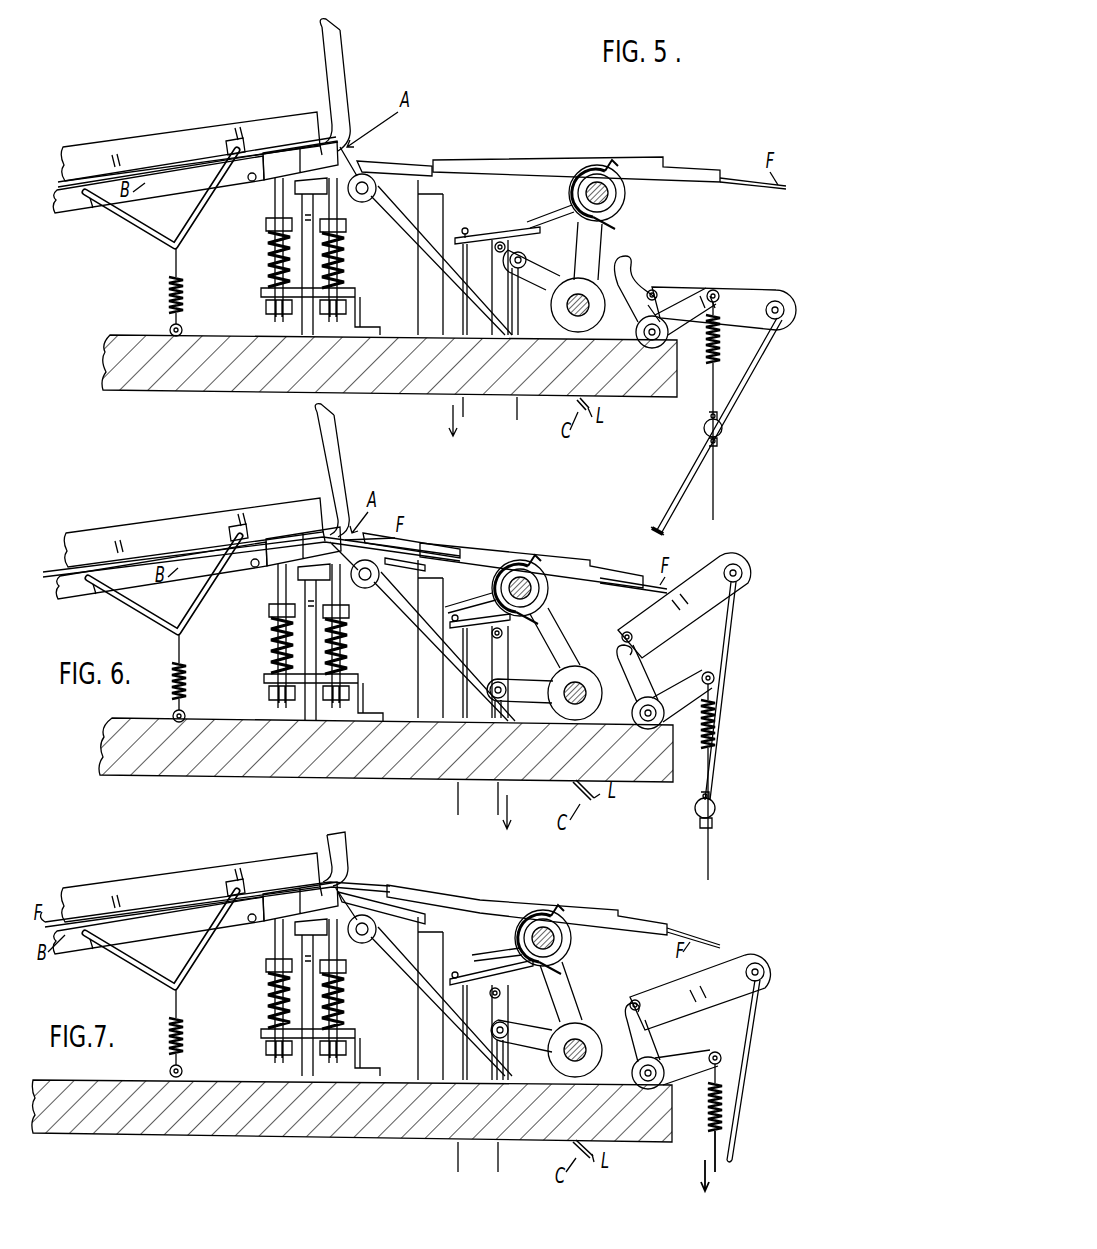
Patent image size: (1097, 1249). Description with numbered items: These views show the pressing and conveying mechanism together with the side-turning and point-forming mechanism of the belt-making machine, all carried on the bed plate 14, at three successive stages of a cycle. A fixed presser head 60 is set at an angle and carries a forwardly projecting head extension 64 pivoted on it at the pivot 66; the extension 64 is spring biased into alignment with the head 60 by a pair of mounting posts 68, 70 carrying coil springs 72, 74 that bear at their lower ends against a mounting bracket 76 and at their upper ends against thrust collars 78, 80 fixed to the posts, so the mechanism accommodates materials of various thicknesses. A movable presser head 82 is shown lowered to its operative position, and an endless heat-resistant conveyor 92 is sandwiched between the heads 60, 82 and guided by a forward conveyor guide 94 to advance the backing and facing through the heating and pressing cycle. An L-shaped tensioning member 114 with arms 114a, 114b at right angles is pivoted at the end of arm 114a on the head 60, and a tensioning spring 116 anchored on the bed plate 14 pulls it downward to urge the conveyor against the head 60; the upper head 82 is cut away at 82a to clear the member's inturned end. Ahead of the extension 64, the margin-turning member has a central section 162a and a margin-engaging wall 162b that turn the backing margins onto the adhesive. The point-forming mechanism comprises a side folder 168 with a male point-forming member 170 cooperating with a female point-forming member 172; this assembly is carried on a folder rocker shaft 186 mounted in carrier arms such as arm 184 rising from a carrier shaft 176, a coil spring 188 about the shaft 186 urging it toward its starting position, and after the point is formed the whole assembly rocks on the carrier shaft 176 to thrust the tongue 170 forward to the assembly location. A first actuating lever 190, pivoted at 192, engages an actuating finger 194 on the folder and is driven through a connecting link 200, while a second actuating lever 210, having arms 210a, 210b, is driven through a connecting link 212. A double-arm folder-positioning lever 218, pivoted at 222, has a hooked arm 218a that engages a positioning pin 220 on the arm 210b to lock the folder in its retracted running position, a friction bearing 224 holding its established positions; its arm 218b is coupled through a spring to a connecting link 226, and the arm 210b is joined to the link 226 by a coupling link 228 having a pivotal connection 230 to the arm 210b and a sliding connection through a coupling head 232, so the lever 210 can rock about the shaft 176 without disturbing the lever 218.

In FIG. 5, the bed plate 14 is at (145, 382).
In FIG. 6, the bed plate 14 is at (100, 764).
In FIG. 7, the bed plate 14 is at (92, 1130).
In FIG. 5, the fixed presser head 60 is at (68, 208).
In FIG. 6, the fixed presser head 60 is at (155, 583).
In FIG. 7, the fixed presser head 60 is at (148, 946).
In FIG. 5, the head extension 64 is at (290, 152).
In FIG. 6, the head extension 64 is at (303, 538).
In FIG. 7, the head extension 64 is at (299, 893).
In FIG. 5, the pivot 66 is at (250, 181).
In FIG. 6, the pivot 66 is at (241, 580).
In FIG. 7, the pivot 66 is at (234, 938).
In FIG. 5, the mounting post 68 is at (270, 205).
In FIG. 6, the mounting post 68 is at (268, 636).
In FIG. 7, the mounting post 68 is at (263, 991).
In FIG. 5, the mounting post 70 is at (345, 262).
In FIG. 6, the mounting post 70 is at (333, 672).
In FIG. 7, the mounting post 70 is at (348, 1001).
In FIG. 5, the coil spring 72 is at (268, 262).
In FIG. 6, the coil spring 72 is at (262, 645).
In FIG. 7, the coil spring 72 is at (258, 1000).
In FIG. 5, the coil spring 74 is at (345, 282).
In FIG. 6, the coil spring 74 is at (364, 646).
In FIG. 7, the coil spring 74 is at (360, 1013).
In FIG. 5, the mounting bracket 76 is at (262, 293).
In FIG. 6, the mounting bracket 76 is at (303, 696).
In FIG. 7, the mounting bracket 76 is at (298, 1048).
In FIG. 5, the thrust collar 78 is at (266, 230).
In FIG. 6, the thrust collar 78 is at (250, 629).
In FIG. 7, the thrust collar 78 is at (245, 975).
In FIG. 5, the thrust collar 80 is at (344, 236).
In FIG. 6, the thrust collar 80 is at (350, 636).
In FIG. 7, the thrust collar 80 is at (348, 991).
In FIG. 5, the movable presser head 82 is at (155, 135).
In FIG. 6, the movable presser head 82 is at (193, 530).
In FIG. 7, the movable presser head 82 is at (190, 881).
In FIG. 5, the cut away 82a is at (234, 138).
In FIG. 6, the cut away 82a is at (218, 530).
In FIG. 7, the cut away 82a is at (219, 868).
In FIG. 5, the endless conveyor 92 is at (63, 158).
In FIG. 6, the endless conveyor 92 is at (50, 540).
In FIG. 7, the endless conveyor 92 is at (92, 900).
In FIG. 5, the forward conveyor guide 94 is at (328, 62).
In FIG. 6, the forward conveyor guide 94 is at (339, 443).
In FIG. 7, the forward conveyor guide 94 is at (346, 850).
In FIG. 5, the L-shaped tensioning member 114 is at (159, 241).
In FIG. 6, the L-shaped tensioning member 114 is at (164, 591).
In FIG. 7, the L-shaped tensioning member 114 is at (154, 947).
In FIG. 5, the arm 114a is at (125, 222).
In FIG. 6, the arm 114a is at (101, 614).
In FIG. 7, the arm 114a is at (86, 966).
In FIG. 5, the arm 114b is at (203, 208).
In FIG. 6, the arm 114b is at (215, 623).
In FIG. 7, the arm 114b is at (200, 996).
In FIG. 5, the tensioning spring 116 is at (168, 296).
In FIG. 6, the tensioning spring 116 is at (159, 678).
In FIG. 7, the tensioning spring 116 is at (149, 1033).
In FIG. 5, the central section 162a is at (369, 205).
In FIG. 6, the central section 162a is at (435, 646).
In FIG. 7, the central section 162a is at (426, 1001).
In FIG. 5, the margin-engaging wall 162b is at (368, 176).
In FIG. 6, the margin-engaging wall 162b is at (397, 548).
In FIG. 7, the margin-engaging wall 162b is at (334, 920).
In FIG. 5, the side folder 168 is at (495, 158).
In FIG. 6, the side folder 168 is at (482, 545).
In FIG. 7, the side folder 168 is at (462, 897).
In FIG. 5, the male point-forming member 170 is at (440, 158).
In FIG. 6, the male point-forming member 170 is at (315, 556).
In FIG. 7, the male point-forming member 170 is at (413, 869).
In FIG. 5, the female point-forming member 172 is at (418, 163).
In FIG. 6, the female point-forming member 172 is at (446, 548).
In FIG. 7, the female point-forming member 172 is at (380, 892).
In FIG. 5, the carrier shaft 176 is at (418, 310).
In FIG. 6, the carrier shaft 176 is at (418, 688).
In FIG. 7, the carrier shaft 176 is at (418, 1050).
In FIG. 5, the carrier arm 184 is at (597, 165).
In FIG. 6, the carrier arm 184 is at (540, 572).
In FIG. 7, the carrier arm 184 is at (540, 912).
In FIG. 5, the folder rocker shaft 186 is at (608, 195).
In FIG. 6, the folder rocker shaft 186 is at (520, 577).
In FIG. 7, the folder rocker shaft 186 is at (555, 932).
In FIG. 5, the coil spring 188 is at (578, 168).
In FIG. 6, the coil spring 188 is at (532, 560).
In FIG. 7, the coil spring 188 is at (548, 915).
In FIG. 5, the first actuating lever 190 is at (478, 232).
In FIG. 6, the first actuating lever 190 is at (448, 624).
In FIG. 7, the first actuating lever 190 is at (456, 972).
In FIG. 5, the pivot 192 is at (498, 253).
In FIG. 6, the pivot 192 is at (492, 637).
In FIG. 7, the pivot 192 is at (490, 995).
In FIG. 5, the actuating finger 194 is at (530, 222).
In FIG. 6, the actuating finger 194 is at (455, 598).
In FIG. 7, the actuating finger 194 is at (478, 950).
In FIG. 5, the connecting link 200 is at (467, 420).
In FIG. 6, the connecting link 200 is at (458, 800).
In FIG. 7, the connecting link 200 is at (456, 1158).
In FIG. 5, the second actuating lever 210 is at (555, 300).
In FIG. 6, the second actuating lever 210 is at (545, 680).
In FIG. 7, the second actuating lever 210 is at (548, 1022).
In FIG. 5, the lever arm 210a is at (543, 272).
In FIG. 6, the lever arm 210a is at (490, 692).
In FIG. 7, the lever arm 210a is at (492, 1040).
In FIG. 5, the arm 210b is at (778, 292).
In FIG. 6, the arm 210b is at (755, 575).
In FIG. 7, the arm 210b is at (752, 952).
In FIG. 5, the connecting link 212 is at (519, 420).
In FIG. 6, the connecting link 212 is at (497, 810).
In FIG. 7, the connecting link 212 is at (496, 1158).
In FIG. 5, the folder-positioning lever 218 is at (632, 257).
In FIG. 6, the folder-positioning lever 218 is at (652, 671).
In FIG. 7, the folder-positioning lever 218 is at (689, 1054).
In FIG. 5, the arm 218a is at (640, 262).
In FIG. 6, the arm 218a is at (620, 645).
In FIG. 7, the arm 218a is at (632, 1003).
In FIG. 5, the arm 218b is at (714, 290).
In FIG. 6, the arm 218b is at (708, 670).
In FIG. 7, the arm 218b is at (715, 1050).
In FIG. 5, the positioning pin 220 is at (656, 291).
In FIG. 6, the positioning pin 220 is at (629, 632).
In FIG. 7, the positioning pin 220 is at (640, 1000).
In FIG. 5, the pivot 222 is at (651, 349).
In FIG. 6, the pivot 222 is at (648, 731).
In FIG. 7, the pivot 222 is at (647, 1090).
In FIG. 5, the friction bearing 224 is at (708, 360).
In FIG. 6, the friction bearing 224 is at (716, 718).
In FIG. 7, the friction bearing 224 is at (722, 1115).
In FIG. 5, the connecting link 226 is at (715, 502).
In FIG. 6, the connecting link 226 is at (711, 890).
In FIG. 7, the connecting link 226 is at (708, 1161).
In FIG. 5, the coupling link 228 is at (752, 366).
In FIG. 6, the coupling link 228 is at (735, 626).
In FIG. 7, the coupling link 228 is at (750, 1032).
In FIG. 5, the pivotal connection 230 is at (780, 320).
In FIG. 6, the pivotal connection 230 is at (740, 566).
In FIG. 7, the pivotal connection 230 is at (764, 970).
In FIG. 5, the coupling head 232 is at (723, 431).
In FIG. 6, the coupling head 232 is at (716, 804).